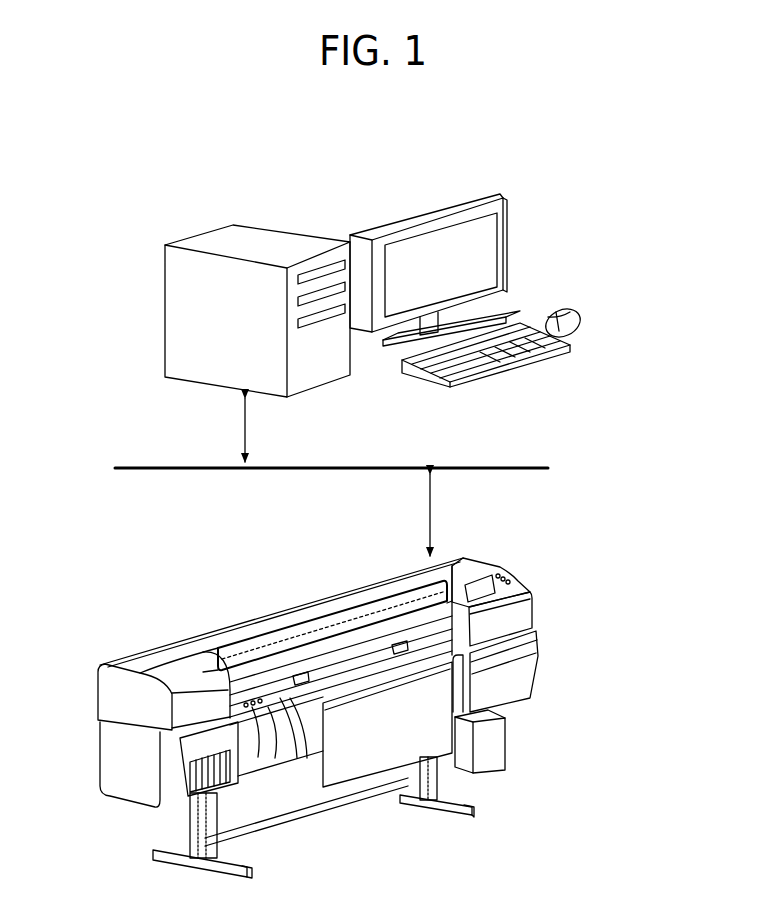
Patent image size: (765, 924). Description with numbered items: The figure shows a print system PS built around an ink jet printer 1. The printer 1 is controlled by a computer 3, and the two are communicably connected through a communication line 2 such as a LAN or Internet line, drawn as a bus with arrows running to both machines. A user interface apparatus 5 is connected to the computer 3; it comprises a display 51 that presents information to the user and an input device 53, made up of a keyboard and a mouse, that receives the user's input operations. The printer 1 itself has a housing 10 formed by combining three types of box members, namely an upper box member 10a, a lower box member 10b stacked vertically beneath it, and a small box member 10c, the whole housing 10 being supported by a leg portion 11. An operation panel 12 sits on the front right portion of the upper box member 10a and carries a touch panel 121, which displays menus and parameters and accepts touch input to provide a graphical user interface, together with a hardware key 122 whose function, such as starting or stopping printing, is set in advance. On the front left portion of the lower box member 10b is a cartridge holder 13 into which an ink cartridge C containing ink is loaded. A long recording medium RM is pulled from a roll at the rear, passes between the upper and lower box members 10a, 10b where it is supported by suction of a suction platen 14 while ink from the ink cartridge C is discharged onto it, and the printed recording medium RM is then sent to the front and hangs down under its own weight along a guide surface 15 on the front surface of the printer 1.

The print system PS is at (126, 231).
The printer 1 is at (385, 686).
The communication line 2 is at (163, 466).
The computer 3 is at (268, 238).
The user interface apparatus 5 is at (626, 257).
The display 51 is at (502, 260).
The input device 53 is at (557, 376).
The housing 10 is at (564, 681).
The upper box member 10a is at (534, 601).
The lower box member 10b is at (539, 645).
The small box member 10c is at (533, 741).
The leg portion 11 is at (437, 788).
The operation panel 12 is at (521, 575).
The touch panel 121 is at (482, 563).
The hardware key 122 is at (510, 578).
The cartridge holder 13 is at (180, 770).
The ink cartridge C is at (184, 790).
The suction platen 14 is at (272, 703).
The guide surface 15 is at (254, 708).
The recording medium RM is at (388, 753).